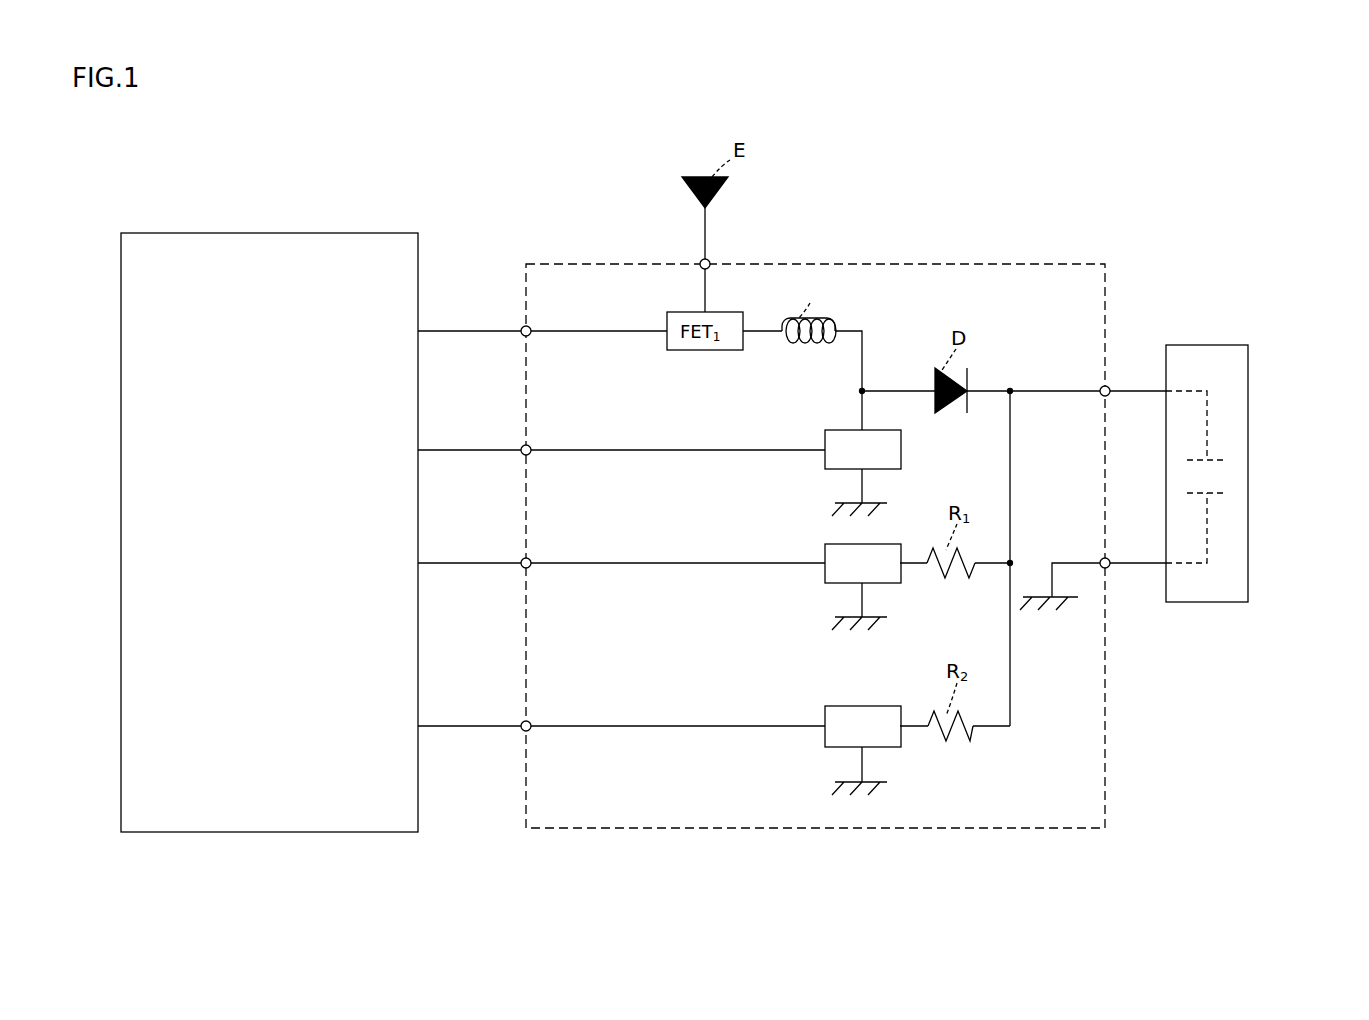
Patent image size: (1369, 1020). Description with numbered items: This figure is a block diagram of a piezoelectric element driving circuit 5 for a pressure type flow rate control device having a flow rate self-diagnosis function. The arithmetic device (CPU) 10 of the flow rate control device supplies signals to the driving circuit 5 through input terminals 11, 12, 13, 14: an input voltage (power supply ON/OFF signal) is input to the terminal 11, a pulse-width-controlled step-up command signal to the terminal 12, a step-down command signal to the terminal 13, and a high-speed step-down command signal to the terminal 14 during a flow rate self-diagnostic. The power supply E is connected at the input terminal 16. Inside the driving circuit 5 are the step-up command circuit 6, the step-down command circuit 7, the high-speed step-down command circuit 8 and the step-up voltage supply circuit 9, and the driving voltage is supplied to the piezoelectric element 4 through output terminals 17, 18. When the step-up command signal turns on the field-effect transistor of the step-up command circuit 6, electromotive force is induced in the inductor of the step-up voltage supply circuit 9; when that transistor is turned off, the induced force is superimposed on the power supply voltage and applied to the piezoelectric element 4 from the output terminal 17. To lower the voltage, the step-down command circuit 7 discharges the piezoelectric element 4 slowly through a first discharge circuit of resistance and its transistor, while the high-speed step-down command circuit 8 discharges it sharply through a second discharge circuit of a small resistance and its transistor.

The piezoelectric element 4 is at (1249, 450).
The piezoelectric element driving circuit 5 is at (1043, 262).
The step-up command circuit 6 is at (823, 475).
The step-down command circuit 7 is at (823, 588).
The high-speed step-down command circuit 8 is at (823, 752).
The step-up voltage supply circuit 9 is at (793, 346).
The arithmetic device (CPU) 10 is at (331, 232).
The input terminal 11 is at (531, 328).
The input terminal 12 is at (531, 447).
The input terminal 13 is at (531, 560).
The input terminal 14 is at (531, 723).
The input terminal 16 is at (710, 261).
The output terminal 17 is at (1110, 388).
The output terminal 18 is at (1110, 560).